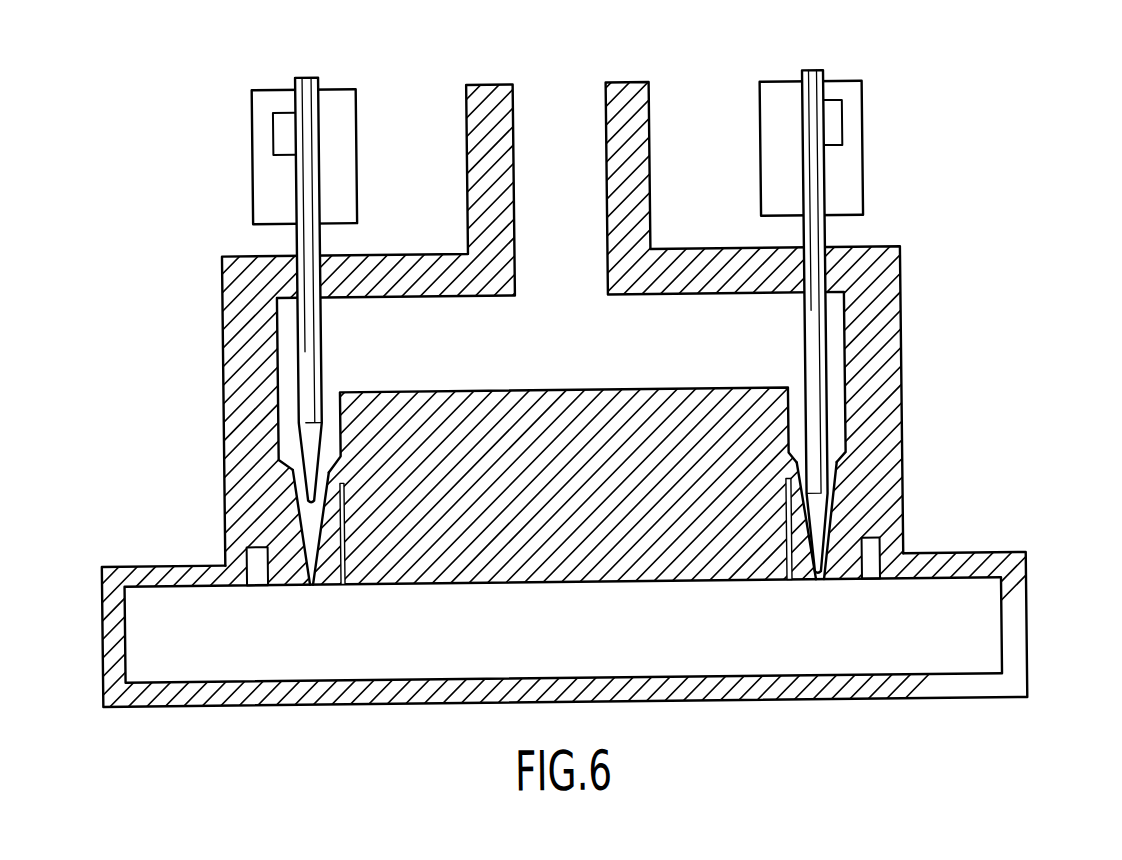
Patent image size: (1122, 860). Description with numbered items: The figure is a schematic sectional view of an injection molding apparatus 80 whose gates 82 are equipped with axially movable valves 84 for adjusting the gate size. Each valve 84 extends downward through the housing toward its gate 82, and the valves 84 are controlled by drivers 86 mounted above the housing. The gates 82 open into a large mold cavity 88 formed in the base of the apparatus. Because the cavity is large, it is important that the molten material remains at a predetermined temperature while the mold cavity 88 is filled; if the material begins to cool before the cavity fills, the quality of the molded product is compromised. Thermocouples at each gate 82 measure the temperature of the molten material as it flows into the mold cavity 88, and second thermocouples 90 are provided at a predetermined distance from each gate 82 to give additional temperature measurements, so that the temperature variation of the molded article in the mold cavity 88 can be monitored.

The injection molding apparatus 80 is at (561, 364).
The gate 82 is at (312, 582).
The axially movable valve 84 is at (310, 429).
The driver 86 is at (271, 185).
The mold cavity 88 is at (982, 612).
The second thermocouple 90 is at (328, 510).